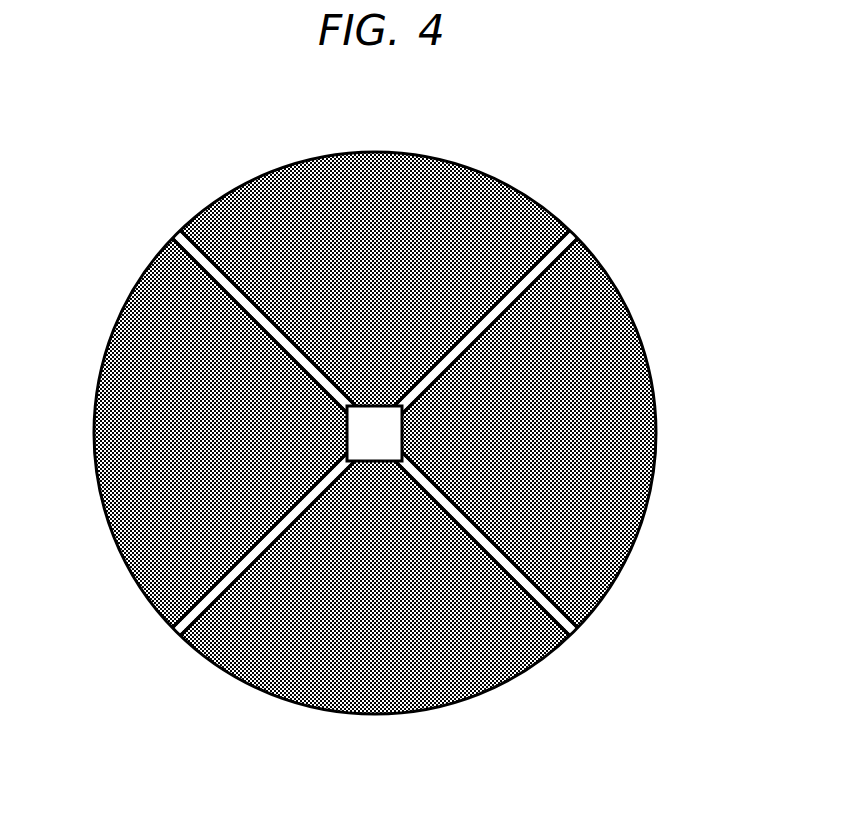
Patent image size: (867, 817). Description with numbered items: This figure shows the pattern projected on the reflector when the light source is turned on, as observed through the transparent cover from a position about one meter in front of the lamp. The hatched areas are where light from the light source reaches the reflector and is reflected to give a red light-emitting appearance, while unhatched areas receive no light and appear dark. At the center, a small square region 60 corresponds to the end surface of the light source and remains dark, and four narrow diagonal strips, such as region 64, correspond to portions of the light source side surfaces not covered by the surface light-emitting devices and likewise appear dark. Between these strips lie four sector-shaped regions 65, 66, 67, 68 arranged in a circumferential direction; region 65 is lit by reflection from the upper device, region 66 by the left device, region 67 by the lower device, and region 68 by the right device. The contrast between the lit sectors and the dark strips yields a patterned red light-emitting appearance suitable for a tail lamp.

The region 60 is at (395, 437).
The region 64 is at (181, 242).
The region 65 is at (434, 172).
The region 66 is at (625, 347).
The region 67 is at (428, 693).
The region 68 is at (110, 470).